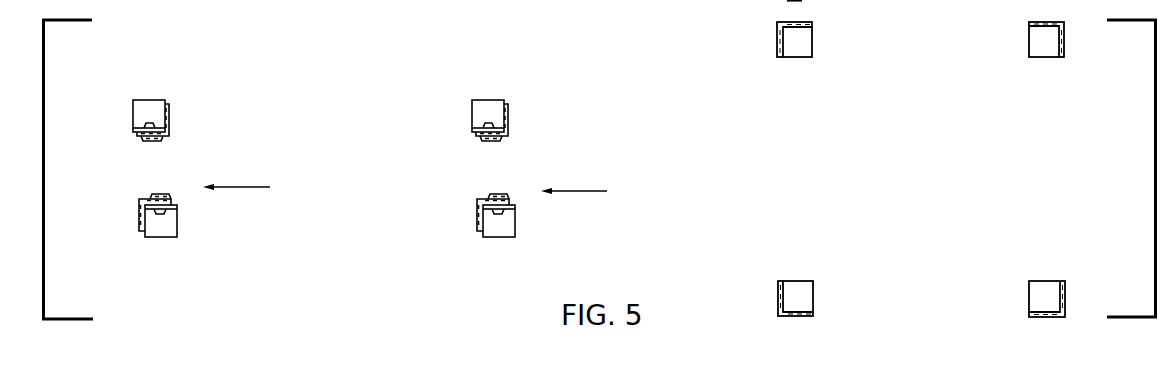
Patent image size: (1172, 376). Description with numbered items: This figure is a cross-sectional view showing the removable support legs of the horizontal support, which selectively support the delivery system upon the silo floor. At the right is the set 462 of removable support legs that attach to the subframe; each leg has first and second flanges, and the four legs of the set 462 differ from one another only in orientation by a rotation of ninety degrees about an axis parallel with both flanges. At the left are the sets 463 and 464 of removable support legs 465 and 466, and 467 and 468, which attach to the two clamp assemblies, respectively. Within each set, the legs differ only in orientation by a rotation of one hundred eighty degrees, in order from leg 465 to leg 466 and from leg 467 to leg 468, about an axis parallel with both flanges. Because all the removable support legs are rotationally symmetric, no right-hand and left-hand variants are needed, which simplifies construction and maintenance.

The set of removable support legs 462 is at (748, 253).
The set of removable support legs 463 is at (260, 191).
The set of removable support legs 464 is at (598, 194).
The removable support leg 465 is at (139, 222).
The removable support leg 466 is at (171, 120).
The removable support leg 467 is at (477, 218).
The removable support leg 468 is at (510, 120).